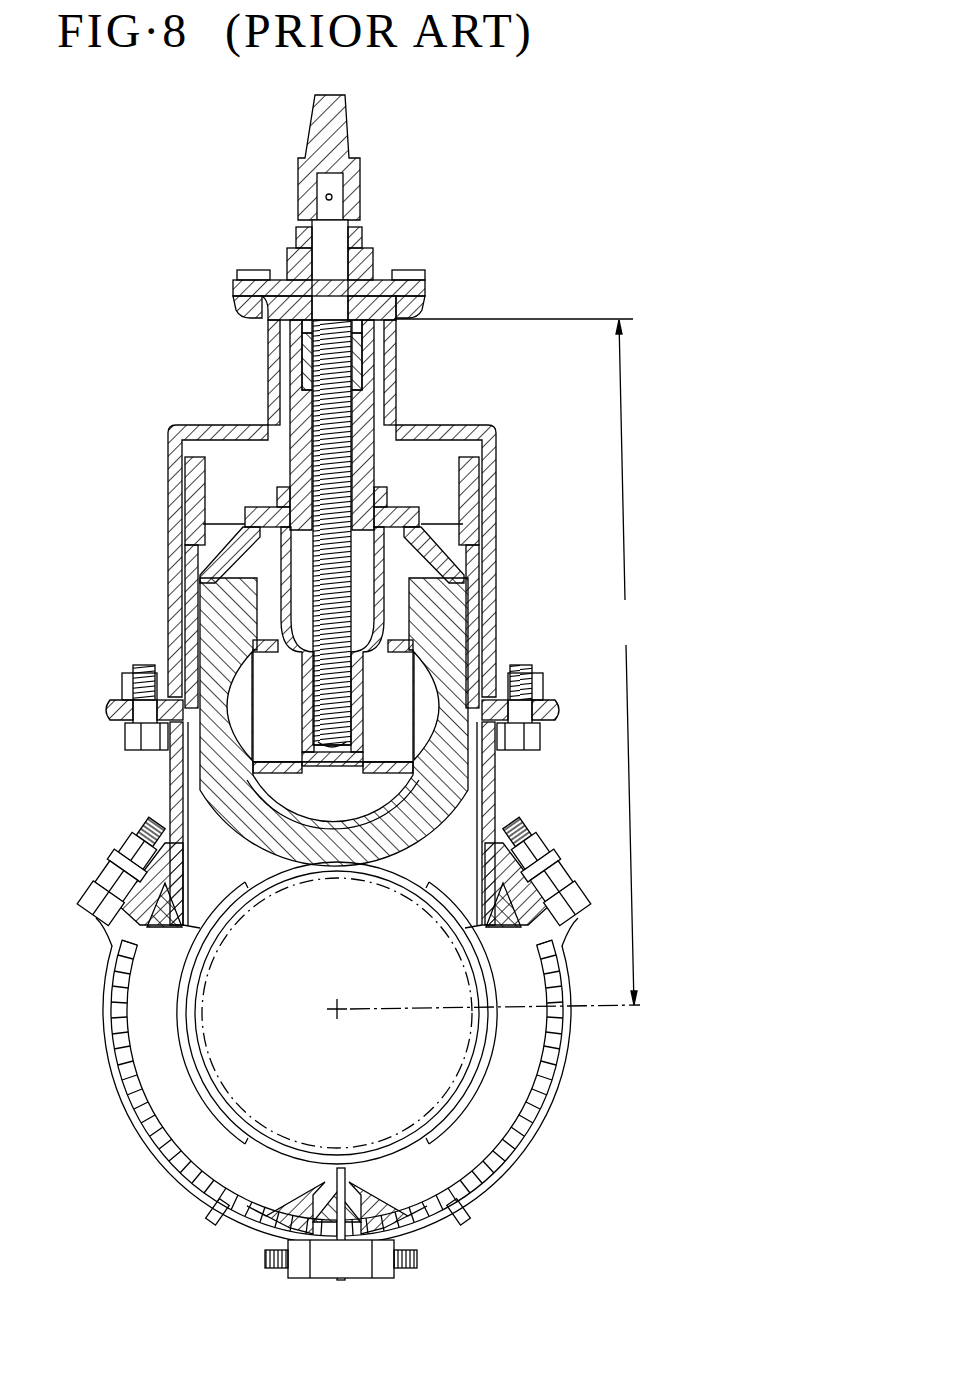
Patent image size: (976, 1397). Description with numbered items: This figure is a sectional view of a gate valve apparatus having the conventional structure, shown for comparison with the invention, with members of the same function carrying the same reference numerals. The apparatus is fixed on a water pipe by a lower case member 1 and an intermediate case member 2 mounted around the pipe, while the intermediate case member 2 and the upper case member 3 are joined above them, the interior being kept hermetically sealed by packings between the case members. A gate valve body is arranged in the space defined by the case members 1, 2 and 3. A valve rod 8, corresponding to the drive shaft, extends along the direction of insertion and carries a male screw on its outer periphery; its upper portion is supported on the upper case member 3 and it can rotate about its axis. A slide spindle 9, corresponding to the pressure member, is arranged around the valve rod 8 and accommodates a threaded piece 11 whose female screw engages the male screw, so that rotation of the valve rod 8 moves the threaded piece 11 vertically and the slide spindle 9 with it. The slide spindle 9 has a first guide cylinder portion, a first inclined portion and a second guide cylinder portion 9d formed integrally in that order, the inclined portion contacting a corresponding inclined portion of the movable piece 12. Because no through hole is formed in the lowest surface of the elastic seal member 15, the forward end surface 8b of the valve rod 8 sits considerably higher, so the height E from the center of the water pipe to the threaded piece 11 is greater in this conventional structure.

The lower case member 1 is at (533, 1143).
The intermediate case member 2 is at (497, 773).
The upper case member 3 is at (452, 428).
The valve rod 8 is at (348, 464).
The forward end surface 8b is at (330, 740).
The slide spindle 9 is at (332, 564).
The second guide cylinder portion 9d is at (370, 734).
The threaded piece 11 is at (360, 365).
The movable piece 12 is at (265, 693).
The elastic seal member 15 is at (218, 798).
The height E is at (483, 669).